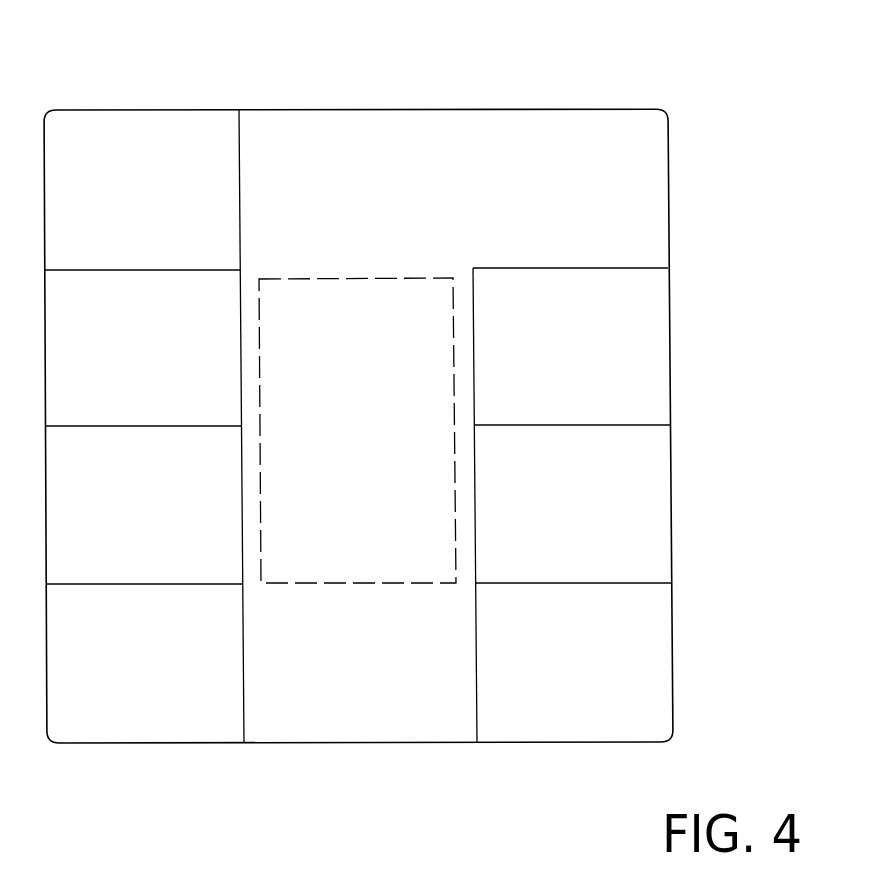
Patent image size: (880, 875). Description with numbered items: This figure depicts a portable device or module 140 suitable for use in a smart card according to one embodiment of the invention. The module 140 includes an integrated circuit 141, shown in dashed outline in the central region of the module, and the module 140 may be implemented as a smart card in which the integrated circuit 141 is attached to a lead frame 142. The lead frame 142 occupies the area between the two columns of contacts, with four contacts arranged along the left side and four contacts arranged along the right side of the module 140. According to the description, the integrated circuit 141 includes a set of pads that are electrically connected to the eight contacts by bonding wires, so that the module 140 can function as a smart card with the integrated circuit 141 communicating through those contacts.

The module 140 is at (713, 165).
The integrated circuit 141 is at (300, 280).
The lead frame 142 is at (393, 730).